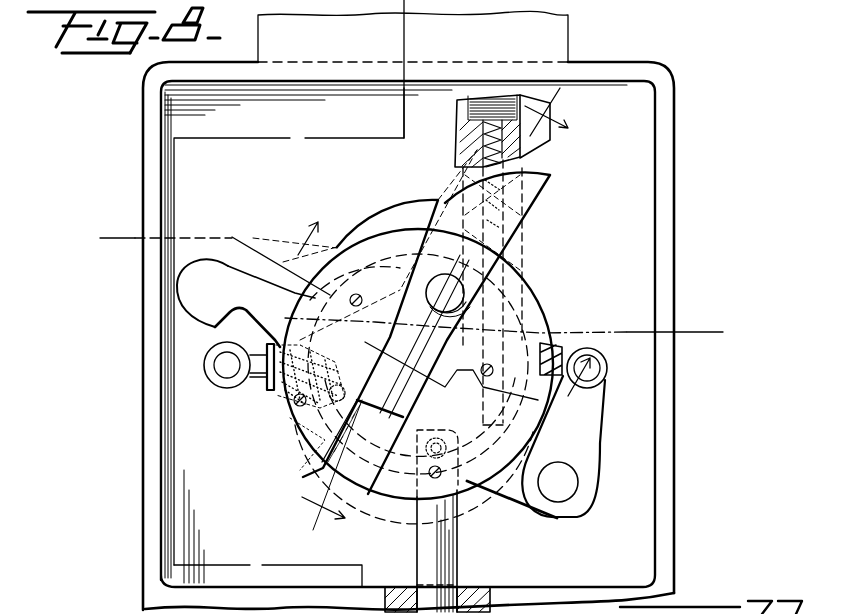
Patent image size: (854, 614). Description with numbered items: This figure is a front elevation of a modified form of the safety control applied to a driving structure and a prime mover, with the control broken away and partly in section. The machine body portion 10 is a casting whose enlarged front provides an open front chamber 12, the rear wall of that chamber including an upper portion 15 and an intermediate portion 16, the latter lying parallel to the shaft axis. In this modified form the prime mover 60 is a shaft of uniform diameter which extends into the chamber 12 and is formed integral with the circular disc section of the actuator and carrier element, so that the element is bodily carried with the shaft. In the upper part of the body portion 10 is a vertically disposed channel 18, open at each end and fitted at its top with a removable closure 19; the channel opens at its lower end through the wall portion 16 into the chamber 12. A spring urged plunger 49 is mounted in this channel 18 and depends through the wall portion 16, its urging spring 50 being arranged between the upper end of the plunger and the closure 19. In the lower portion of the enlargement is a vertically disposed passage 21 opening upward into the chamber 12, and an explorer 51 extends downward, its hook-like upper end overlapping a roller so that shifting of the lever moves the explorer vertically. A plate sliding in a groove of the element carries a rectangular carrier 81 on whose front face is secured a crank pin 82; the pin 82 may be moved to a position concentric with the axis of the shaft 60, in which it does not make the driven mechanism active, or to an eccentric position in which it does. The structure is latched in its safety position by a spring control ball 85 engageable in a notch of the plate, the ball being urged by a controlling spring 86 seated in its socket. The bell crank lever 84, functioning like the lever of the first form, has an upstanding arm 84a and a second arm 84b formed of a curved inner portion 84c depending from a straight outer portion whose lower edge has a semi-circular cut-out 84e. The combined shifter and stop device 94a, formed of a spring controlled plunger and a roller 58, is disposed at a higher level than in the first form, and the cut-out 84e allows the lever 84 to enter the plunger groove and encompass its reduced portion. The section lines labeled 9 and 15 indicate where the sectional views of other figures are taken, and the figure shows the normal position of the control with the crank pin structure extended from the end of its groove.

The section line 9- 9 is at (424, 42).
The body portion 10 is at (117, 200).
The open front chamber 12 is at (472, 338).
The upper portion of rear wall 15 is at (443, 316).
The intermediate portion of rear wall 16 is at (437, 314).
The vertically disposed channel 18 is at (467, 160).
The removable closure 19 is at (507, 93).
The vertically disposed passage 21 is at (490, 605).
The spring urged plunger 49 is at (525, 222).
The urging spring 50 is at (470, 137).
The explorer 51 is at (455, 565).
The roller 58 is at (233, 398).
The prime mover 60 is at (440, 398).
The rectangular carrier 81 is at (443, 330).
The crank pin 82 is at (450, 293).
The bell crank lever 84 is at (557, 520).
The upstanding arm 84a is at (215, 278).
The arm of lever 84b is at (508, 493).
The curved inner portion 84c is at (518, 457).
The semi-circular cut-out 84e is at (238, 308).
The spring control ball 85 is at (292, 425).
The controlling spring 86 is at (310, 376).
The combined shifter and stop device 94a is at (270, 392).